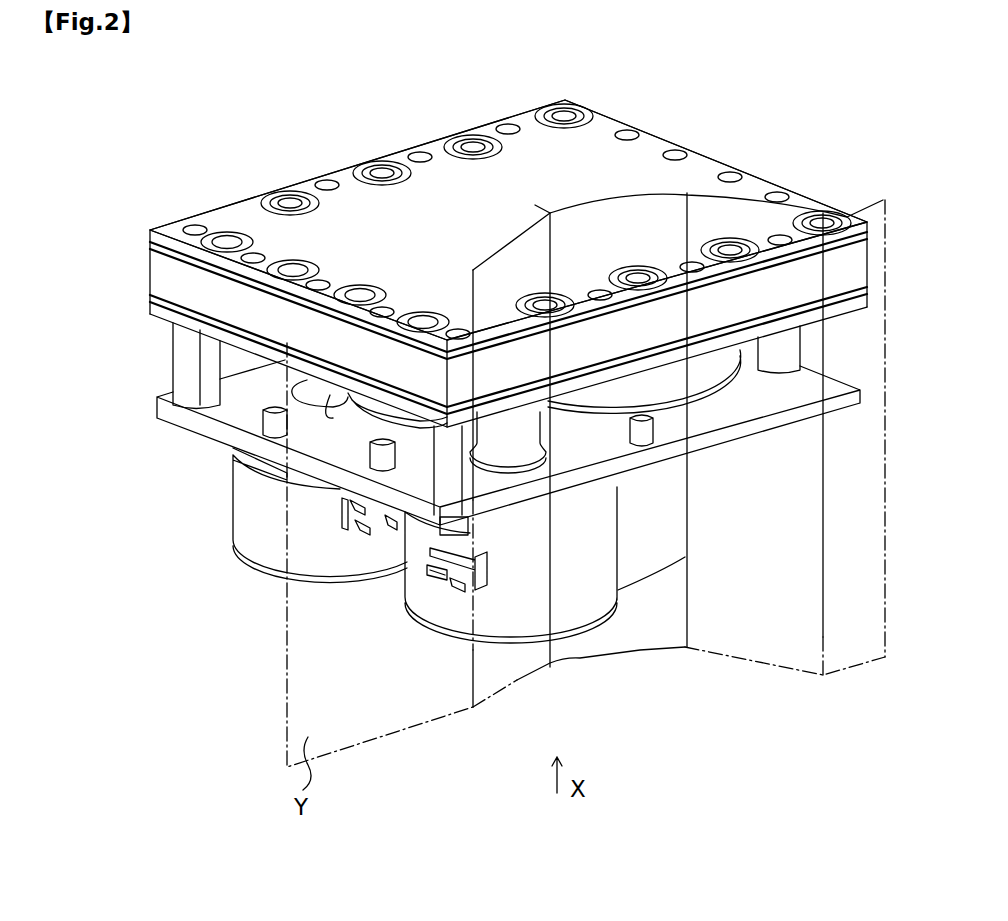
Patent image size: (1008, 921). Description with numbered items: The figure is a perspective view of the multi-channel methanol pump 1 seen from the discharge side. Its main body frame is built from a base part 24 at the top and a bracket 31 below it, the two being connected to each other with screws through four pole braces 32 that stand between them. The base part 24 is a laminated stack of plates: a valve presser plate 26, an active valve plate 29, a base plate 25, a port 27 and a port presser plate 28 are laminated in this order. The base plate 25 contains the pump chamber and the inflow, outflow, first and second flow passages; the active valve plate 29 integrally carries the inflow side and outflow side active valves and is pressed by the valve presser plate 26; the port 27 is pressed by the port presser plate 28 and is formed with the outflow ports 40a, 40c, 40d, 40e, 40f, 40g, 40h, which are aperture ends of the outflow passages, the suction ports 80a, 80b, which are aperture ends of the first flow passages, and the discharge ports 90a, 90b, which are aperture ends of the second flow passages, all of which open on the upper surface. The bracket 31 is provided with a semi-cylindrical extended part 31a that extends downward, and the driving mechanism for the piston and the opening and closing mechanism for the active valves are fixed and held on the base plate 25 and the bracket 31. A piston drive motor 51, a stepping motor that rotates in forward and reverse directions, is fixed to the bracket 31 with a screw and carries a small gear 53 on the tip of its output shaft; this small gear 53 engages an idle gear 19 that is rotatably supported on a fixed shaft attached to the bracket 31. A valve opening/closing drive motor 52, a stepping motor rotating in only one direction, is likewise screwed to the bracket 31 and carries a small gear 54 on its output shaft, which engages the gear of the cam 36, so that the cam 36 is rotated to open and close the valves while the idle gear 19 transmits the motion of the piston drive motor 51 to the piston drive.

The pump 1 is at (830, 101).
The idle gear 19 is at (363, 417).
The base part 24 is at (52, 210).
The base plate 25 is at (162, 275).
The valve presser plate 26 is at (165, 313).
The port 27 is at (156, 249).
The port presser plate 28 is at (152, 234).
The active valve plate 29 is at (162, 300).
The bracket 31 is at (232, 409).
The extended part 31a is at (657, 540).
The pole brace 32 is at (190, 357).
The cam 36 is at (710, 380).
The outflow port 40a is at (565, 108).
The outflow port 40c is at (730, 247).
The outflow port 40d is at (638, 275).
The outflow port 40e is at (545, 302).
The outflow port 40f is at (290, 198).
The outflow port 40g is at (382, 168).
The outflow port 40h is at (473, 140).
The piston drive motor 51 is at (257, 537).
The valve opening/closing drive motor 52 is at (585, 595).
The small gear 53 is at (322, 388).
The small gear 54 is at (513, 440).
The suction port 80a is at (360, 293).
The suction port 80b is at (293, 268).
The discharge port 90a is at (423, 320).
The discharge port 90b is at (227, 240).